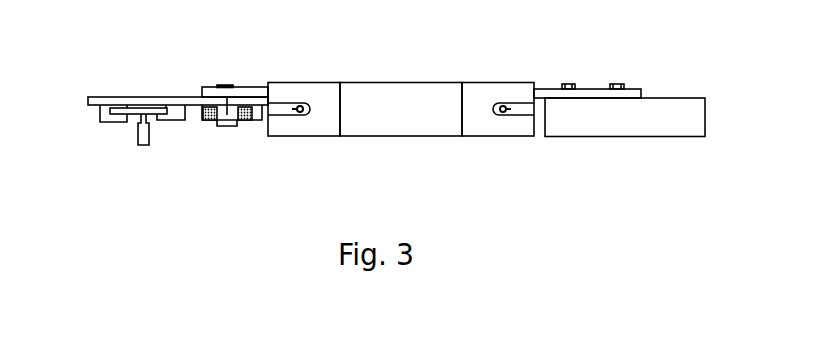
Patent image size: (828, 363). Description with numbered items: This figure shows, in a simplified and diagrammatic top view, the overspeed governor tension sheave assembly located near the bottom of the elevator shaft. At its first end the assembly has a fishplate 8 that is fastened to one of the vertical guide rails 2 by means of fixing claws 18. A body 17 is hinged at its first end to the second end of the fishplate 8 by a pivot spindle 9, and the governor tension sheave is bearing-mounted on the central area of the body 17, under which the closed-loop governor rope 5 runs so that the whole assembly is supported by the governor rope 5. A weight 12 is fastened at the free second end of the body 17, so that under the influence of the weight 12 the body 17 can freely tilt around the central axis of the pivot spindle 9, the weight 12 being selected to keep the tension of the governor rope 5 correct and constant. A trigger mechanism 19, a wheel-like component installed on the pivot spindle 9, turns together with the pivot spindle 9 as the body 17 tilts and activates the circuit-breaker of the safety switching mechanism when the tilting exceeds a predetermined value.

The guide rail 2 is at (143, 146).
The governor rope 5 is at (297, 104).
The fishplate 8 is at (101, 97).
The pivot spindle 9 is at (232, 86).
The weight 12 is at (638, 132).
The body 17 is at (552, 92).
The fixing claws 18 is at (100, 122).
The trigger mechanism 19 is at (245, 121).